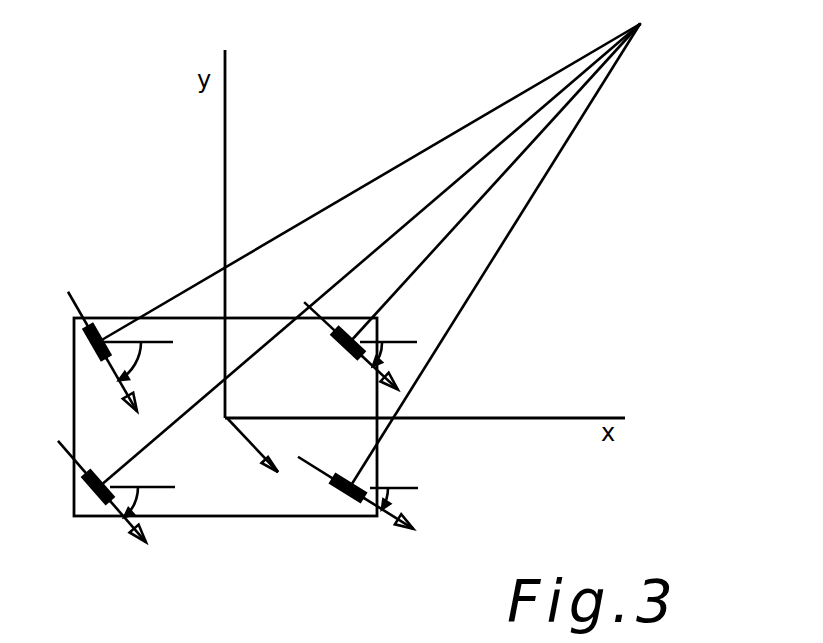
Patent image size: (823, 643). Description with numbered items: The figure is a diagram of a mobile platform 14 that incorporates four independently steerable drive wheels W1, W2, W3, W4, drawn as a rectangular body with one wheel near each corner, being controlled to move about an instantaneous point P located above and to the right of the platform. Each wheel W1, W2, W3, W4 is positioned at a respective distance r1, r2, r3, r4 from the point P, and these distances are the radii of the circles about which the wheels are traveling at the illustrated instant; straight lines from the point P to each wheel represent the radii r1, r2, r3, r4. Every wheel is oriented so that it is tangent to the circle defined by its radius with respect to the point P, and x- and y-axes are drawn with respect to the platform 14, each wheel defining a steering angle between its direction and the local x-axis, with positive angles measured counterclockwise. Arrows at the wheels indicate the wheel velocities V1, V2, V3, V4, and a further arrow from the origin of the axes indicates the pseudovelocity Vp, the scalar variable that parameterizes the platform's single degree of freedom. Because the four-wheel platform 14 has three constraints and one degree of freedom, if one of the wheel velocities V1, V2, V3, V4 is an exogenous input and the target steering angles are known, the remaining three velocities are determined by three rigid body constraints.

The mobile platform 14 is at (120, 318).
The instantaneous point P is at (693, 25).
The steerable drive wheel W1 is at (332, 483).
The steerable drive wheel W2 is at (328, 335).
The steerable drive wheel W3 is at (77, 477).
The steerable drive wheel W4 is at (66, 333).
The wheel velocity V1 is at (375, 523).
The wheel velocity V2 is at (367, 384).
The wheel velocity V3 is at (116, 527).
The wheel velocity V4 is at (111, 390).
The pseudovelocity Vp is at (233, 445).
The radius r1 is at (495, 255).
The radius r2 is at (495, 183).
The radius r3 is at (370, 255).
The radius r4 is at (370, 182).